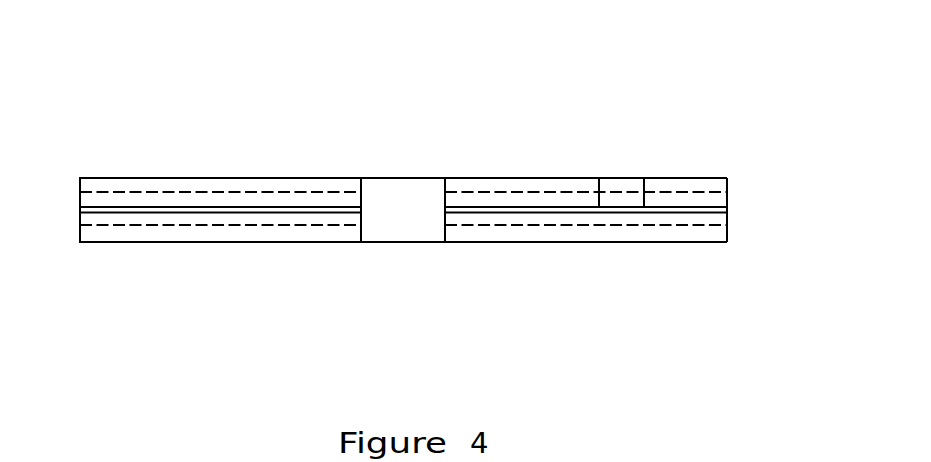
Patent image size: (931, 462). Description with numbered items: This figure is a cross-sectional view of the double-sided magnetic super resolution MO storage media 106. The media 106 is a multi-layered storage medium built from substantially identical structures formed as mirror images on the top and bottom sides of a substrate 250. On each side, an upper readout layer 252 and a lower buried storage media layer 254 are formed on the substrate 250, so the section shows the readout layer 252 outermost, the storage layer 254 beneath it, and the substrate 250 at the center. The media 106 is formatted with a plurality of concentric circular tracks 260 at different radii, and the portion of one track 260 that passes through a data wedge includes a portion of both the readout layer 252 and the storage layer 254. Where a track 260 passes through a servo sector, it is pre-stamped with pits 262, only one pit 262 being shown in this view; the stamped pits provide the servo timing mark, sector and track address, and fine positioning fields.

The double-sided magnetic super resolution (MSR) MO storage media 106 is at (590, 52).
The substrate 250 is at (727, 210).
The upper readout layer 252 is at (661, 185).
The lower buried storage media layer 254 is at (695, 200).
The concentric circular track 260 is at (613, 185).
The pit 262 is at (612, 198).